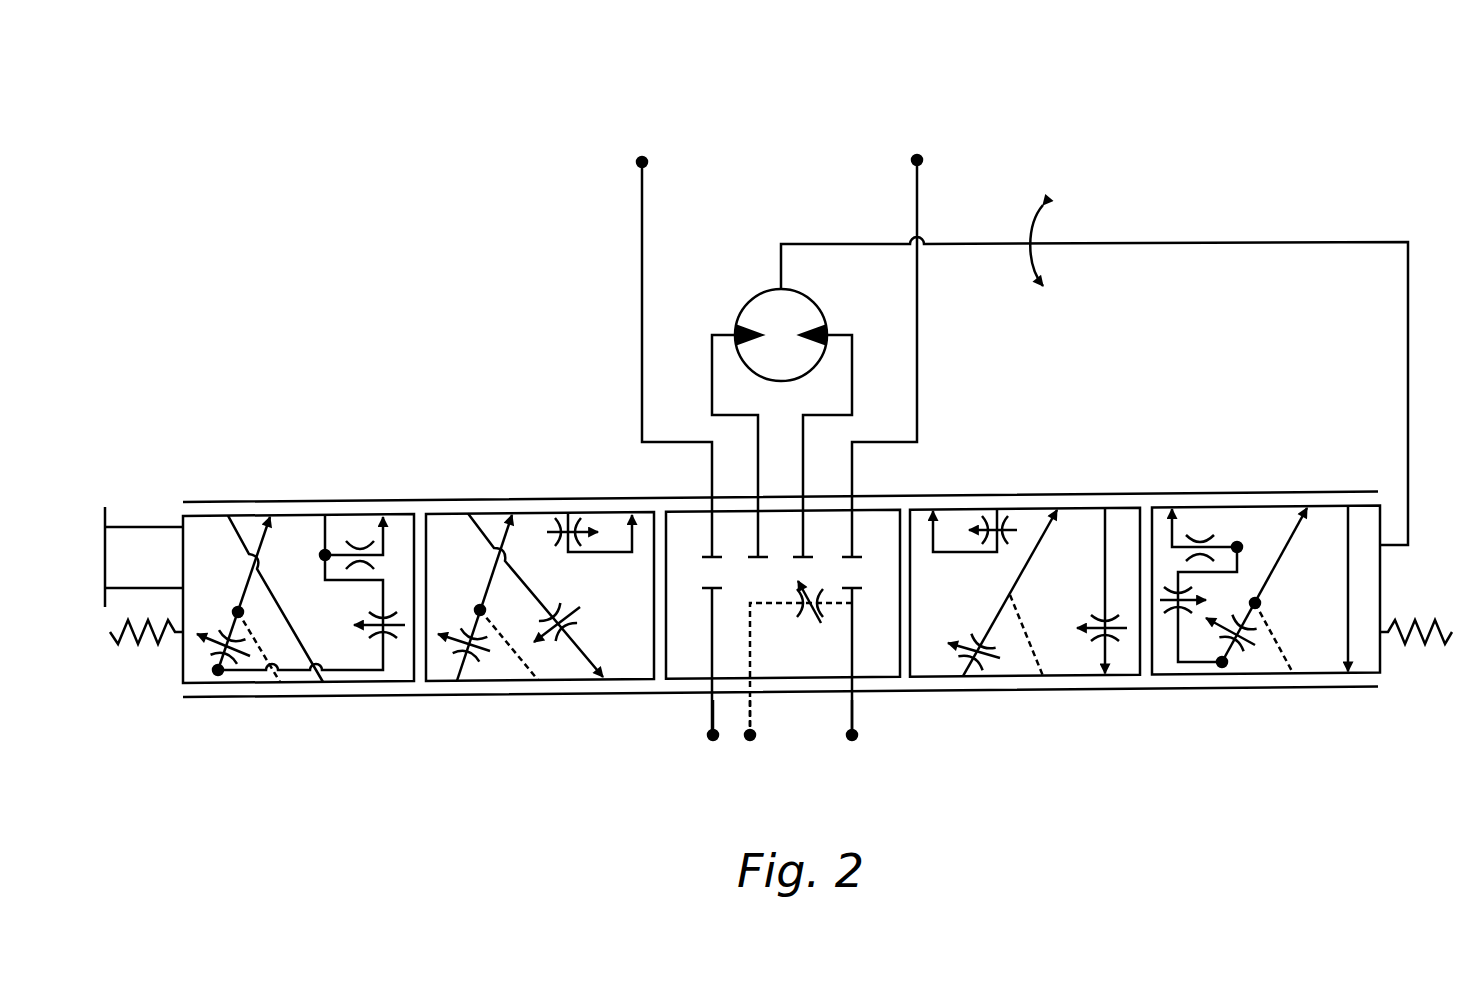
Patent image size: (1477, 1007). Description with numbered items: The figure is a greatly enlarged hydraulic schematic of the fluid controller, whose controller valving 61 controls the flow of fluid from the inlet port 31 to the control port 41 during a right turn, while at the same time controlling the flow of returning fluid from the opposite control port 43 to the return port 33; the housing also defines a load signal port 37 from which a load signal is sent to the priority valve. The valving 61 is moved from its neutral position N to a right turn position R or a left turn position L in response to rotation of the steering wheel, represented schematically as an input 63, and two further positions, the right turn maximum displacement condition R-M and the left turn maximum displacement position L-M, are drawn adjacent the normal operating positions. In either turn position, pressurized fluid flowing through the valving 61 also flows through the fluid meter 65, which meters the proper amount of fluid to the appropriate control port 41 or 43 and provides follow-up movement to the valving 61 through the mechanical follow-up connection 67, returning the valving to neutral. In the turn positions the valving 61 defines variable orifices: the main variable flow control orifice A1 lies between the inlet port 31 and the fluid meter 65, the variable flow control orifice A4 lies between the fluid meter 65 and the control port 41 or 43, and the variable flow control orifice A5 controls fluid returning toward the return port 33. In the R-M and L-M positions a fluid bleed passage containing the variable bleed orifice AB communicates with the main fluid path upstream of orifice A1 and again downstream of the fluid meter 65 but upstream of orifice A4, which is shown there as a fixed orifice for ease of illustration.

The inlet port 31 is at (713, 735).
The return port 33 is at (852, 735).
The load signal port 37 is at (750, 735).
The control port 41 is at (917, 160).
The control port 43 is at (642, 162).
The controller valving 61 is at (505, 432).
The input 63 is at (105, 513).
The fluid meter 65 is at (752, 290).
The mechanical follow-up connection 67 is at (1225, 242).
The main variable flow control orifice A1 is at (450, 663).
The variable flow control orifice A4 is at (557, 555).
The variable flow control orifice A5 is at (563, 654).
The variable bleed orifice AB is at (394, 651).